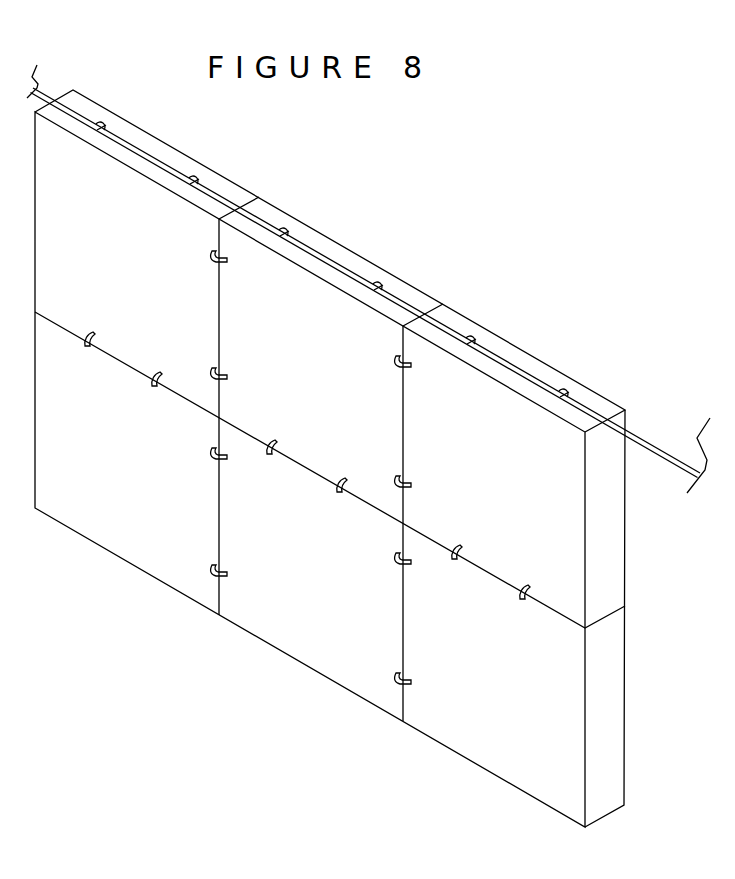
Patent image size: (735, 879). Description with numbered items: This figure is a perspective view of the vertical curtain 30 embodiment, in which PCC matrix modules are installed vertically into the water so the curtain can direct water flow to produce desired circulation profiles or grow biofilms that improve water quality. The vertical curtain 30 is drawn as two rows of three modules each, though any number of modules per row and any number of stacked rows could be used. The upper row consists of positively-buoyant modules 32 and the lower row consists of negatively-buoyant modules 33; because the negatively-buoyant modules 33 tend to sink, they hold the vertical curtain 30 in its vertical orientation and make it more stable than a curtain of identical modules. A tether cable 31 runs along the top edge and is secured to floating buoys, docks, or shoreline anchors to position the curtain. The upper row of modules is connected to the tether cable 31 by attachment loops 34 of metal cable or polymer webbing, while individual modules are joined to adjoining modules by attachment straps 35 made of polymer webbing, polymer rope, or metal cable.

The vertical curtain 30 is at (435, 257).
The tether cable 31 is at (645, 438).
The positively-buoyant modules 32 is at (145, 272).
The negatively-buoyant modules 33 is at (145, 470).
The attachment loops 34 is at (563, 386).
The attachment straps 35 is at (216, 572).